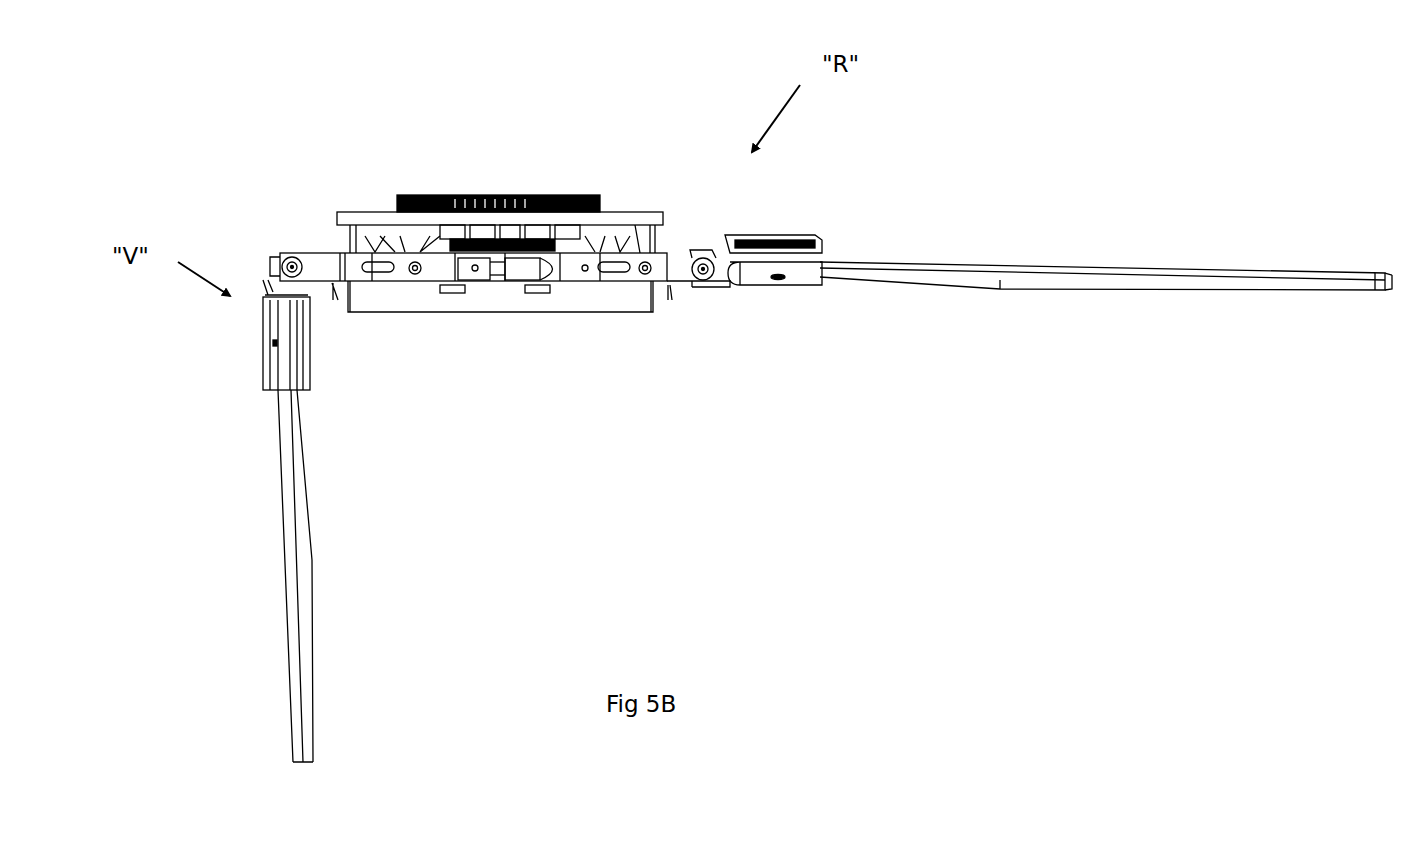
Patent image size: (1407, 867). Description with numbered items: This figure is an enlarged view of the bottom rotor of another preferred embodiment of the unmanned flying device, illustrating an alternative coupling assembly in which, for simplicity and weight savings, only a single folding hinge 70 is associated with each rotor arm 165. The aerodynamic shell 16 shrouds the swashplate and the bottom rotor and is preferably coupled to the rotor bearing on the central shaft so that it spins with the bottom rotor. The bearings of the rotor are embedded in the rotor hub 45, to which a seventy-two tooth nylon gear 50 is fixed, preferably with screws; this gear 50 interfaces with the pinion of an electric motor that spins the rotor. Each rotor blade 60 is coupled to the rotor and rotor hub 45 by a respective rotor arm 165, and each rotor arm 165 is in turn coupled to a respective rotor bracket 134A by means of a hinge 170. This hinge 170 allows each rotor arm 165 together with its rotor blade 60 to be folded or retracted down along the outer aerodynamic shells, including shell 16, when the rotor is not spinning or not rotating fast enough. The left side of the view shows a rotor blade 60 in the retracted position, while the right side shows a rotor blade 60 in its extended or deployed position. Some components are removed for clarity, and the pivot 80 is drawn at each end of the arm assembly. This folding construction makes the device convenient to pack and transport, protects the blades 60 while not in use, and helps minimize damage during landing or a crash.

The aerodynamic shell 16 is at (577, 297).
The rotor hub 45 is at (455, 292).
The nylon gear 50 is at (612, 184).
The rotor blade 60 is at (270, 508).
The folding hinge 70 is at (260, 244).
The hinge 80 is at (315, 270).
The rotor bracket 134A is at (333, 283).
The rotor arm 165 is at (255, 348).
The hinge 170 is at (716, 294).